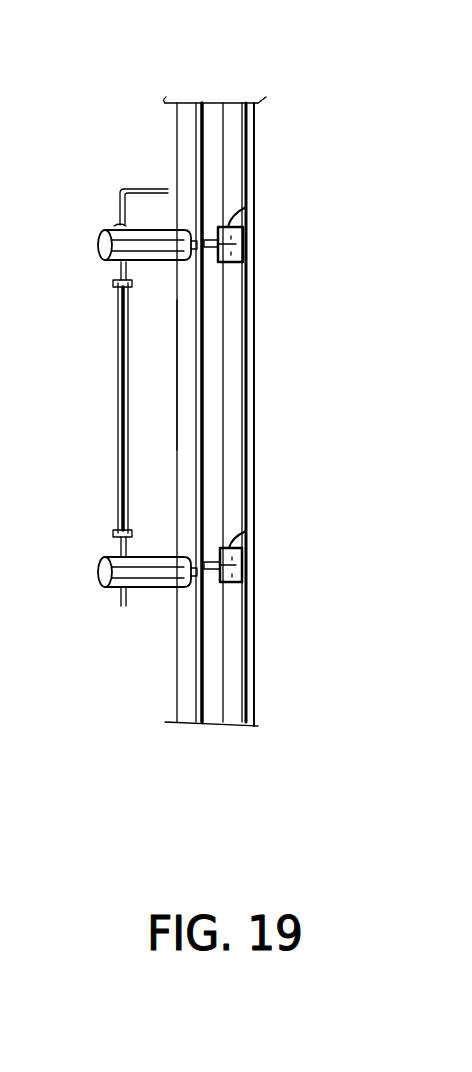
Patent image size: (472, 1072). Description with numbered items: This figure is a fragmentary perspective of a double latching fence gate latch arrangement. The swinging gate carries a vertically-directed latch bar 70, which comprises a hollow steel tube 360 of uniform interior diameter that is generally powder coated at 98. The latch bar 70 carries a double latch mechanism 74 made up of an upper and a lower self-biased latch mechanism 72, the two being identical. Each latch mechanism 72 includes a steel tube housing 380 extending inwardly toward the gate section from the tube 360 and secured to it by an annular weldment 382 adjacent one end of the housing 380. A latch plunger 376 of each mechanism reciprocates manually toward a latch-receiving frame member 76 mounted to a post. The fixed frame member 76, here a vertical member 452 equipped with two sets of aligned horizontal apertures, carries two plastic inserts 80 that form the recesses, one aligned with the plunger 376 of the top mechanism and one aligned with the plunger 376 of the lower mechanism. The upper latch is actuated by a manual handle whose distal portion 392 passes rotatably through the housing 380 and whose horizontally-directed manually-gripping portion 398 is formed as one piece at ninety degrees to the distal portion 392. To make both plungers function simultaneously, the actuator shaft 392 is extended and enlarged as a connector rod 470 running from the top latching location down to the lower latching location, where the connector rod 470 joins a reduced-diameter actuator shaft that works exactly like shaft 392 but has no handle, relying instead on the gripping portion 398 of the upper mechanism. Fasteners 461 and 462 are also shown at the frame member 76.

The vertically-directed latch bar 70 is at (168, 676).
The self-biased latch mechanism 72 is at (135, 218).
The double latch mechanism 74 is at (112, 441).
The latch-receiving frame member 76 is at (272, 130).
The plastic insert 80 is at (252, 210).
The powder coating 98 is at (156, 242).
The steel tube 360 is at (178, 432).
The latch plunger 376 is at (218, 262).
The steel tube housing 380 is at (158, 262).
The annular weldment 382 is at (252, 174).
The distal portion of manual handle 392 is at (116, 278).
The manually-gripping portion 398 is at (160, 188).
The vertical member 452 is at (240, 340).
The fastener 461 is at (248, 212).
The fastener 462 is at (252, 236).
The connector rod 470 is at (118, 378).